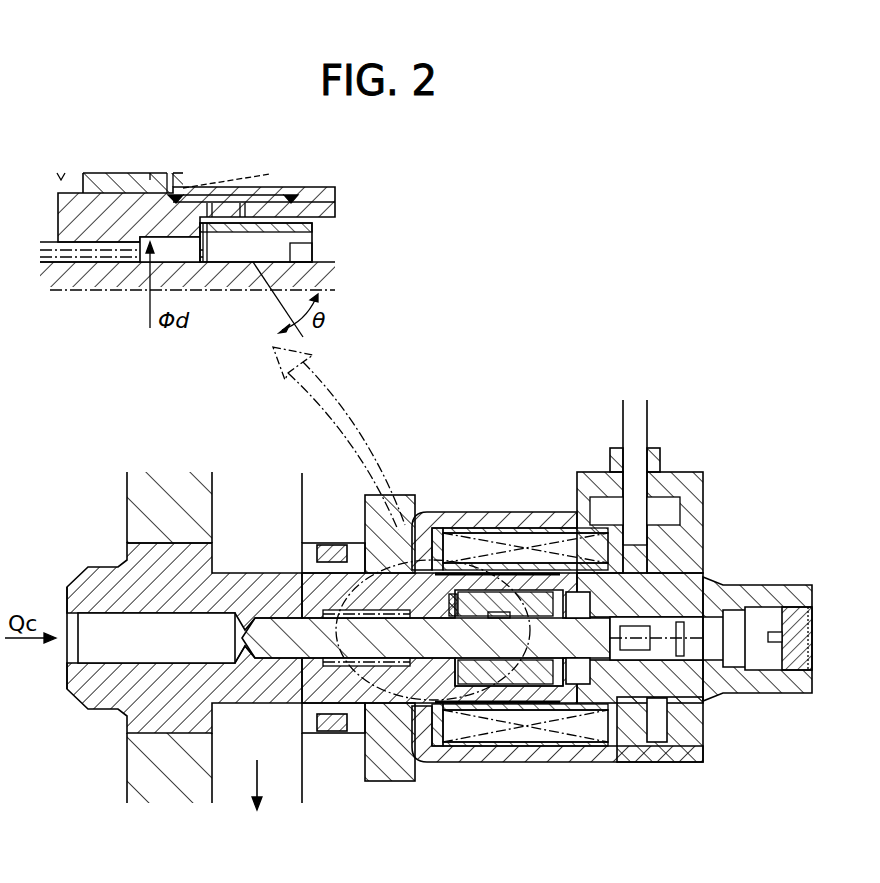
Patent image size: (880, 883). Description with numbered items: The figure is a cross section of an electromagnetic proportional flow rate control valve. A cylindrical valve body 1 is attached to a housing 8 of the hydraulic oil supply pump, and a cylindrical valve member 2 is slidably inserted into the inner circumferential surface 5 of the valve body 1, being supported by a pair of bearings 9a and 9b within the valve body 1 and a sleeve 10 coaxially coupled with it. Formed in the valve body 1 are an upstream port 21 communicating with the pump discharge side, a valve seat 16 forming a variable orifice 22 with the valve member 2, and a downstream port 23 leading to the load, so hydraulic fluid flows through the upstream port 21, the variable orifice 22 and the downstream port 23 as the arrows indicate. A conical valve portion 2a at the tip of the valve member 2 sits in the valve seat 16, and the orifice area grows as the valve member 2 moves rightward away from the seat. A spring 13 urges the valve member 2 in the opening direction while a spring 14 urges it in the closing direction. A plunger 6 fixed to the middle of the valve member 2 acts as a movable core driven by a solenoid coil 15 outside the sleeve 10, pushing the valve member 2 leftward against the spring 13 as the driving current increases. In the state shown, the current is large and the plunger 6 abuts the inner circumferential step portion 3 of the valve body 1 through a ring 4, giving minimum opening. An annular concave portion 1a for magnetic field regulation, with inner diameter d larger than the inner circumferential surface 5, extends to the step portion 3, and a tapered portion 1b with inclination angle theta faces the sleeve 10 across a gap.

The valve body 1 is at (78, 200).
The concave portion used for magnetic field regulation 1a is at (185, 240).
The tapered portion used for magnetic field regulation 1b is at (228, 205).
The valve member 2 is at (265, 630).
The valve portion 2a is at (165, 525).
The inner circumferential step portion 3 is at (207, 205).
The ring 4 is at (203, 190).
The inner circumferential surface 5 is at (107, 243).
The plunger 6 is at (502, 692).
The housing 8 is at (130, 782).
The bearing 9a is at (290, 608).
The bearing 9b is at (573, 612).
The sleeve 10 is at (760, 592).
The spring 13 is at (445, 670).
The spring 14 is at (677, 695).
The solenoid coil 15 is at (560, 735).
The valve seat 16 is at (247, 672).
The upstream port 21 is at (100, 635).
The variable orifice 22 is at (190, 543).
The downstream port 23 is at (283, 792).